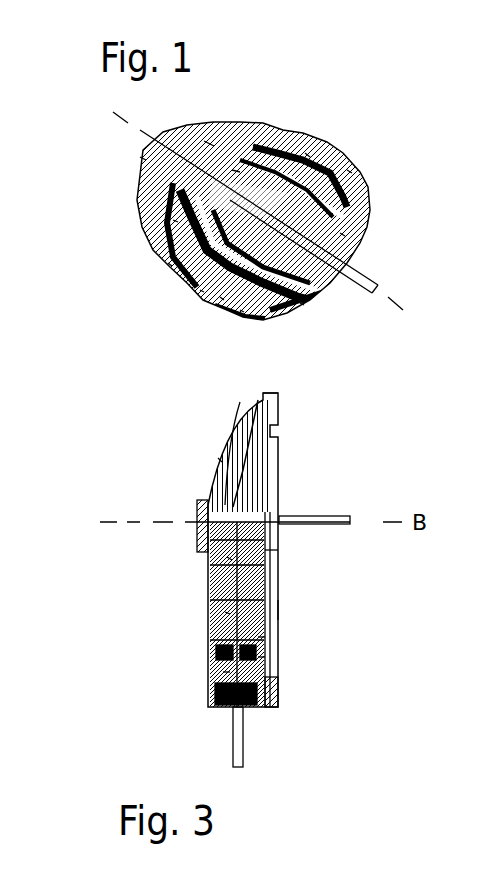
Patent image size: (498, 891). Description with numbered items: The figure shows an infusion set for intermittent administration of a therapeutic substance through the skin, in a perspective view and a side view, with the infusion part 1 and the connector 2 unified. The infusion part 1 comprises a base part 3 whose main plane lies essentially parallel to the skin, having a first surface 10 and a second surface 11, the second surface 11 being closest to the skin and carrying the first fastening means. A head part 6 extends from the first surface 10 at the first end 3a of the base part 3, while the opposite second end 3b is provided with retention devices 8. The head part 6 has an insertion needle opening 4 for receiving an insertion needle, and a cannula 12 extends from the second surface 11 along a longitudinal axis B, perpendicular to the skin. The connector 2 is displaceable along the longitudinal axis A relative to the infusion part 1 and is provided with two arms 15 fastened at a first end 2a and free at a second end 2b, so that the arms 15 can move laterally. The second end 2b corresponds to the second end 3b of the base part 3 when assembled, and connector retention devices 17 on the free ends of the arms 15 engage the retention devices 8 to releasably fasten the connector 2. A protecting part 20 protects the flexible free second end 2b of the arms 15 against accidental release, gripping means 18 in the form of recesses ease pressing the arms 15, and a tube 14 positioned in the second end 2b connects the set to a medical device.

In FIG. 1, the infusion part 1 is at (190, 178).
In FIG. 3, the infusion part 1 is at (252, 492).
In FIG. 1, the connector 2 is at (338, 233).
In FIG. 3, the connector 2 is at (215, 698).
In FIG. 1, the first end of the connector 2a is at (253, 145).
In FIG. 1, the second end of the connector 2b is at (347, 170).
In FIG. 1, the base part 3 is at (168, 263).
In FIG. 3, the base part 3 is at (270, 577).
In FIG. 1, the first end of the base part 3a is at (140, 157).
In FIG. 3, the first end of the base part 3a is at (275, 403).
In FIG. 1, the second end of the base part 3b is at (300, 303).
In FIG. 3, the second end of the base part 3b is at (278, 690).
In FIG. 1, the insertion needle opening 4 is at (232, 170).
In FIG. 3, the insertion needle opening 4 is at (200, 535).
In FIG. 1, the head part 6 is at (204, 141).
In FIG. 3, the head part 6 is at (218, 458).
In FIG. 3, the retention devices 8 is at (263, 657).
In FIG. 3, the first surface 10 is at (270, 552).
In FIG. 3, the second surface 11 is at (280, 610).
In FIG. 3, the cannula 12 is at (305, 518).
In FIG. 1, the tube 14 is at (350, 273).
In FIG. 3, the tube 14 is at (238, 745).
In FIG. 1, the arms 15 is at (305, 153).
In FIG. 3, the arms 15 is at (227, 557).
In FIG. 3, the connector retention devices 17 is at (263, 637).
In FIG. 1, the gripping means 18 is at (200, 290).
In FIG. 3, the gripping means 18 is at (225, 612).
In FIG. 1, the protecting part 20 is at (240, 310).
In FIG. 3, the protecting part 20 is at (223, 672).